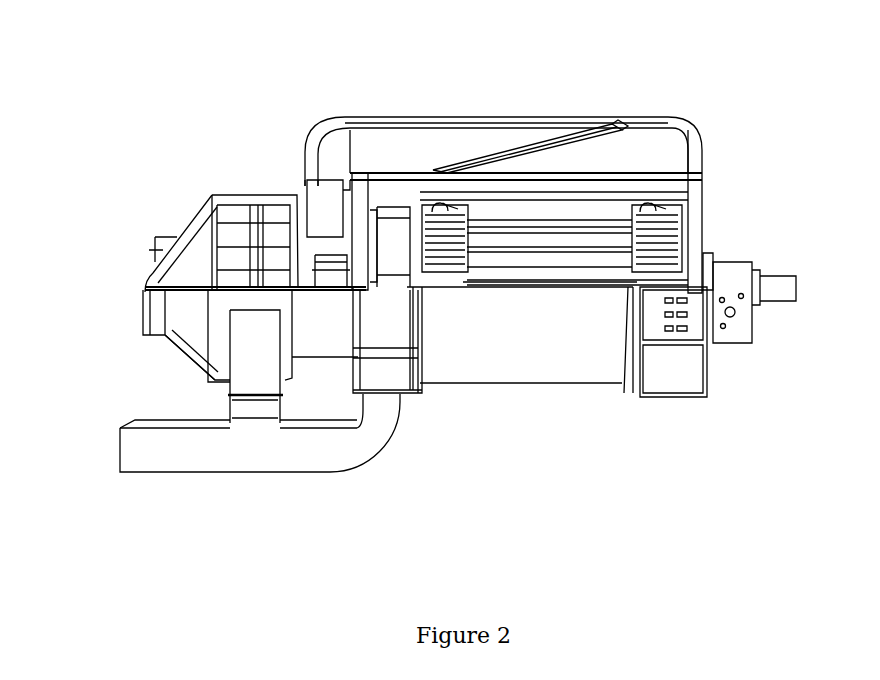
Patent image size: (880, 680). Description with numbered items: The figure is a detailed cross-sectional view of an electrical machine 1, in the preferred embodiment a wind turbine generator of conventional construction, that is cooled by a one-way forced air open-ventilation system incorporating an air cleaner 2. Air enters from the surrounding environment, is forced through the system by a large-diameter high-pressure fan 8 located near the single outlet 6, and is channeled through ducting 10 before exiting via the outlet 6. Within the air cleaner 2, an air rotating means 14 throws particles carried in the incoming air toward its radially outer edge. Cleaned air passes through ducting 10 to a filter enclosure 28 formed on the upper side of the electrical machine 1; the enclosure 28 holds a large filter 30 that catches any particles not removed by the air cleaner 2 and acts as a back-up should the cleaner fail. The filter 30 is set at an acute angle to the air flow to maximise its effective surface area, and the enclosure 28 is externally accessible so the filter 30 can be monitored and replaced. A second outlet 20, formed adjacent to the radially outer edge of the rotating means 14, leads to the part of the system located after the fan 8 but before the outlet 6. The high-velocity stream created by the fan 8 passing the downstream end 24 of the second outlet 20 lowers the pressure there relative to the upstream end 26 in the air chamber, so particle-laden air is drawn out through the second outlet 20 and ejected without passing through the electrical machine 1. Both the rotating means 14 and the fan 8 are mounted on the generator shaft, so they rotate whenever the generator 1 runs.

The electrical machine 1 is at (594, 395).
The air cleaner 2 is at (215, 187).
The outlet 6 is at (120, 428).
The large-diameter high-pressure fan 8 is at (400, 238).
The ducting 10 is at (335, 193).
The air rotating means 14 is at (228, 220).
The second outlet 20 is at (250, 375).
The downstream end 24 is at (257, 422).
The upstream end 26 is at (257, 323).
The filter enclosure 28 is at (402, 117).
The filter 30 is at (540, 140).